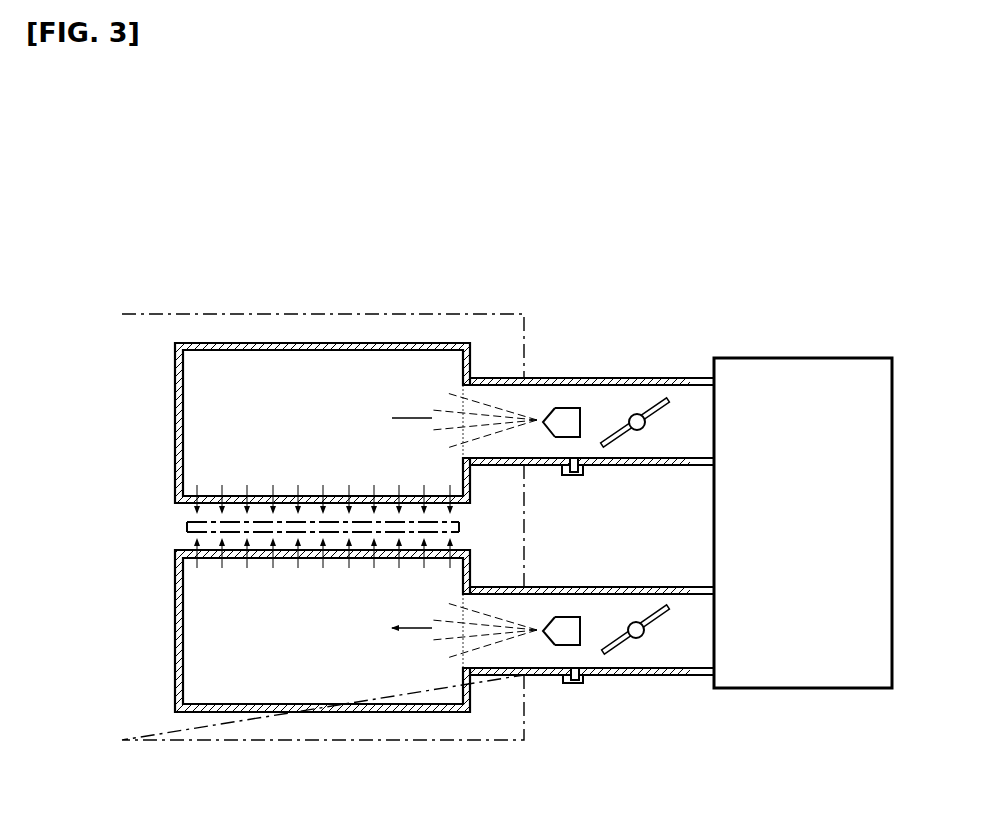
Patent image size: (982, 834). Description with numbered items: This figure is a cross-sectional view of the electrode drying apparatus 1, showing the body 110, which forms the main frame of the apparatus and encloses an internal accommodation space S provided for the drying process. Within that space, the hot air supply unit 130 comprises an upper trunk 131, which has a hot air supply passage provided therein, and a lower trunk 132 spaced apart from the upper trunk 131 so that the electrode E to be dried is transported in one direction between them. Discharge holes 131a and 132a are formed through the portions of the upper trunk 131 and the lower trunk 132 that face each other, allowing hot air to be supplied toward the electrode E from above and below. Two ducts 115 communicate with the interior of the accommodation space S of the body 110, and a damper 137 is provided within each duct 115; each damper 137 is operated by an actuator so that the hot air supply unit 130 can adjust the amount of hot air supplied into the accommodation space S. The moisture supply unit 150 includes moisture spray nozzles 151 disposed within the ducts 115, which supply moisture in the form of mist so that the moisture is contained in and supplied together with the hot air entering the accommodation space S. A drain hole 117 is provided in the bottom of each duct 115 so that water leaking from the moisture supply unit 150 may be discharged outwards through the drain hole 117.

The electrode drying apparatus 1 is at (505, 268).
The body 110 is at (321, 313).
The duct 115 is at (680, 432).
The drain hole 117 is at (573, 478).
The hot air supply unit 130 is at (176, 337).
The upper trunk 131 is at (205, 342).
The discharge holes 131a is at (195, 504).
The lower trunk 132 is at (208, 714).
The discharge holes 132a is at (195, 549).
The damper 137 is at (644, 398).
The moisture supply unit 150 is at (578, 407).
The moisture spray nozzle 151 is at (549, 411).
The accommodation space S is at (153, 396).
The electrode E is at (187, 524).